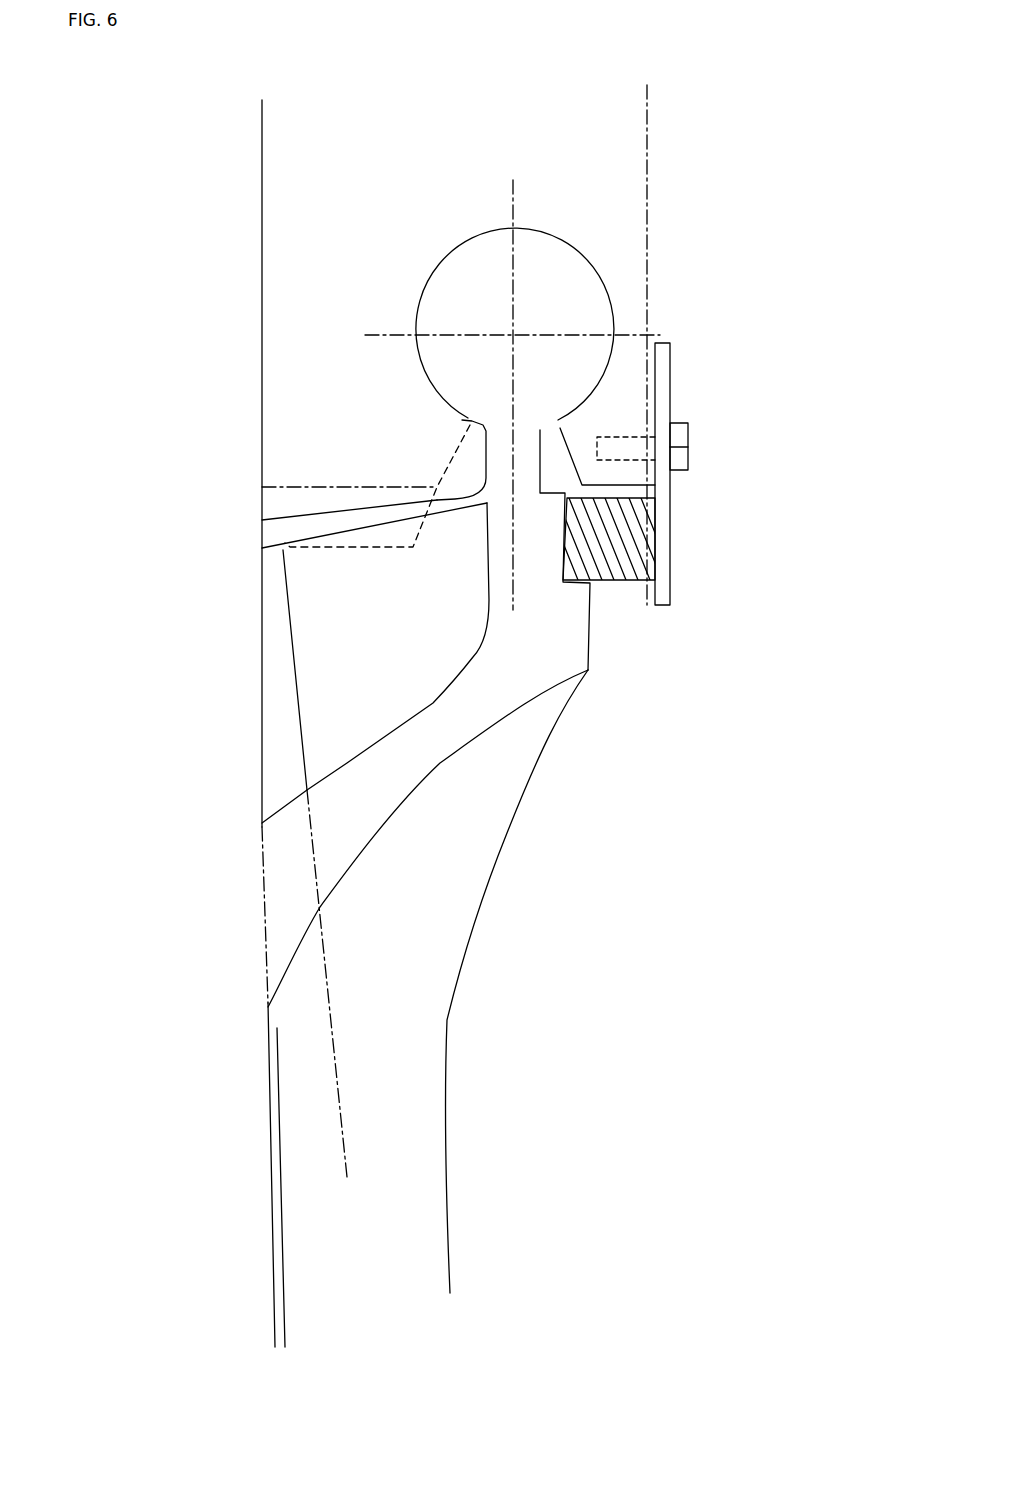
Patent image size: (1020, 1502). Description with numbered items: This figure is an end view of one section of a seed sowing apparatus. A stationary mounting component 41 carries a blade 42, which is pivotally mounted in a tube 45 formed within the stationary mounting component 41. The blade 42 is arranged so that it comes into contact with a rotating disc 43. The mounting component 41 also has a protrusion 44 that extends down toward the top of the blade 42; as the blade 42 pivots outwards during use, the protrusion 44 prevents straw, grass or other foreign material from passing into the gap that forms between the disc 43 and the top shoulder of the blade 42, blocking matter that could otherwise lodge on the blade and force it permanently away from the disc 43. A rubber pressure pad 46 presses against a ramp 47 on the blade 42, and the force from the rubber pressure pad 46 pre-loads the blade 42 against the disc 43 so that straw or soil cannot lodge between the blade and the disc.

The stationary mounting component 41 is at (602, 193).
The blade 42 is at (553, 625).
The rotating disc 43 is at (270, 1180).
The protrusion 44 is at (300, 512).
The tube 45 is at (608, 298).
The rubber pressure pad 46 is at (628, 550).
The ramp 47 is at (558, 520).